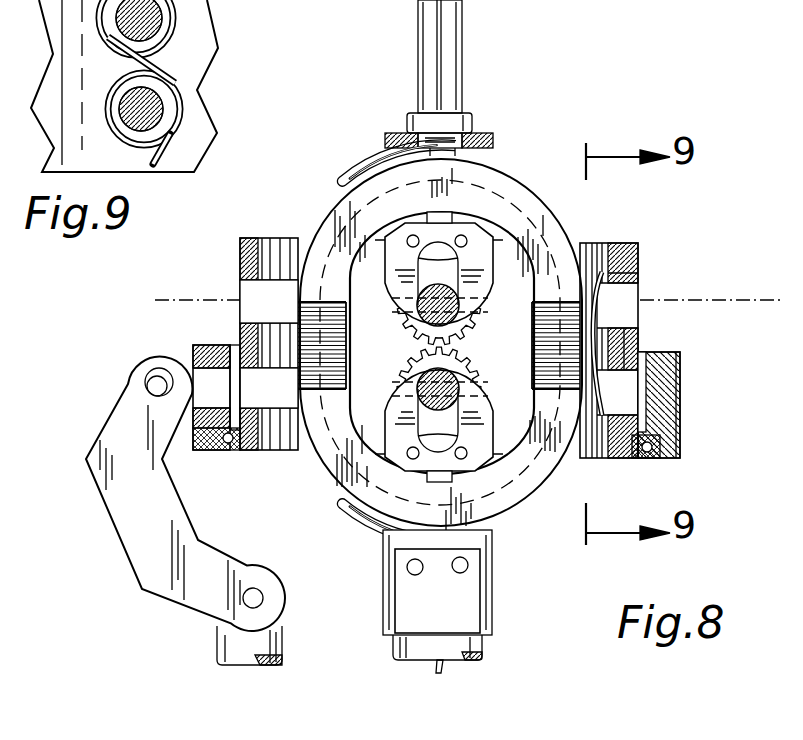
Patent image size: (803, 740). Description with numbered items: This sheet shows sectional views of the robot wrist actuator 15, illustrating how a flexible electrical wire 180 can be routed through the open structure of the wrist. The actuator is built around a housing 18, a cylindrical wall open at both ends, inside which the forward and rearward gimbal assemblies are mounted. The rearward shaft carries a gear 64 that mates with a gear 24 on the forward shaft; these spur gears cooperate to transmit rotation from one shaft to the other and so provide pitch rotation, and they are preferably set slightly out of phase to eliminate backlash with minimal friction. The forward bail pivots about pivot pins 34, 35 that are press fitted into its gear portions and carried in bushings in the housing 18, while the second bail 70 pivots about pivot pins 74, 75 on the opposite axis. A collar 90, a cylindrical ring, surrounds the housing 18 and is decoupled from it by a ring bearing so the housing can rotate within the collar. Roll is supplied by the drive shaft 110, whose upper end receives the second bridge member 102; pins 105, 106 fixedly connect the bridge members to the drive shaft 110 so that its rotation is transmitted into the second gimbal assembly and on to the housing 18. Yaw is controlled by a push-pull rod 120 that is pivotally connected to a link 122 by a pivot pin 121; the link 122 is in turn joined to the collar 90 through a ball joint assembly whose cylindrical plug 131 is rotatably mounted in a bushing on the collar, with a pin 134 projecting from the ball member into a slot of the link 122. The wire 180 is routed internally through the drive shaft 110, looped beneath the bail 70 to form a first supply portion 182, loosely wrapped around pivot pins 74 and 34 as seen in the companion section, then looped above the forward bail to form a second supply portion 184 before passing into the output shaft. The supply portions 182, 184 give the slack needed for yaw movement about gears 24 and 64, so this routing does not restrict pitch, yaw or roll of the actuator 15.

In FIG. 8, the robot wrist actuator 15 is at (563, 122).
In FIG. 8, the housing 18 is at (630, 248).
In FIG. 8, the gear 24 is at (407, 328).
In FIG. 9, the pivot pin 34 is at (160, 20).
In FIG. 8, the pivot pin 34 is at (625, 298).
In FIG. 8, the pivot pin 35 is at (280, 313).
In FIG. 8, the gear 64 is at (450, 360).
In FIG. 8, the second bail 70 is at (332, 462).
In FIG. 9, the pivot pin 74 is at (153, 107).
In FIG. 8, the pivot pin 74 is at (623, 392).
In FIG. 8, the pivot pin 75 is at (269, 388).
In FIG. 8, the collar 90 is at (670, 417).
In FIG. 8, the second bridge member 102 is at (488, 567).
In FIG. 8, the pin 105 is at (415, 575).
In FIG. 8, the pin 106 is at (460, 573).
In FIG. 8, the drive shaft 110 is at (465, 595).
In FIG. 8, the push-pull rod 120 is at (223, 640).
In FIG. 8, the pivot pin 121 is at (261, 598).
In FIG. 8, the link 122 is at (160, 515).
In FIG. 8, the cylindrical plug 131 is at (224, 398).
In FIG. 8, the pin 134 is at (158, 383).
In FIG. 9, the flexible electrical wire 180 is at (173, 72).
In FIG. 8, the flexible electrical wire 180 is at (445, 663).
In FIG. 8, the first supply portion 182 is at (365, 520).
In FIG. 8, the second supply portion 184 is at (363, 172).